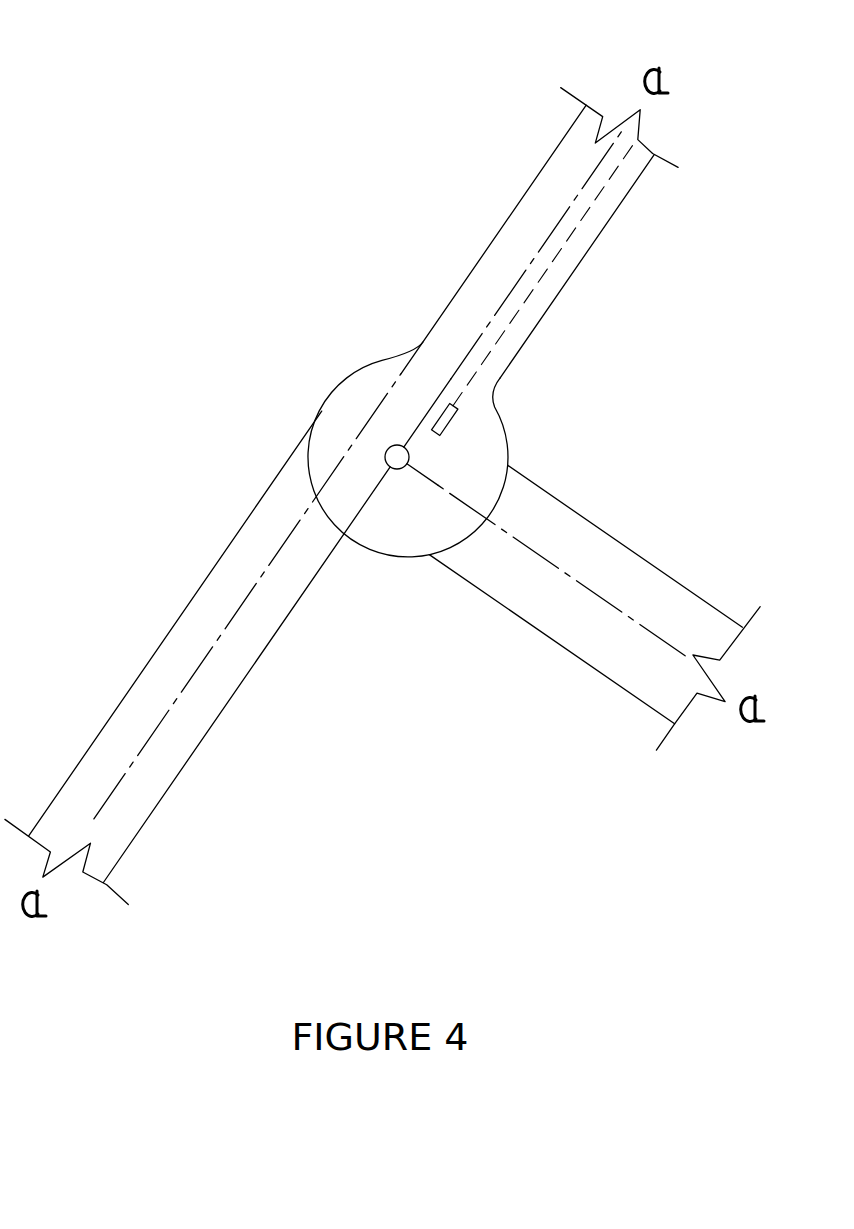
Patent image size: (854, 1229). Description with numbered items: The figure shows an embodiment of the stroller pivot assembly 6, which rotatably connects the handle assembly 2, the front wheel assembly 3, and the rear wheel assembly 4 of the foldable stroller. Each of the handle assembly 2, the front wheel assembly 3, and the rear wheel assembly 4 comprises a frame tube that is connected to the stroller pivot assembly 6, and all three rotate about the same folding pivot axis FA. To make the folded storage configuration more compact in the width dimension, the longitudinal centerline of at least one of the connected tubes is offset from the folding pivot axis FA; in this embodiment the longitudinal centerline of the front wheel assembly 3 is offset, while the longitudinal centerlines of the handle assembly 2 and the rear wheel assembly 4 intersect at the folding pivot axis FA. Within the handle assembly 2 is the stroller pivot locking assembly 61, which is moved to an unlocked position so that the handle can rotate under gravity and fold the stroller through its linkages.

The handle assembly 2 is at (530, 213).
The front wheel assembly 3 is at (150, 691).
The rear wheel assembly 4 is at (638, 585).
The stroller pivot assembly 6 is at (243, 228).
The stroller pivot locking assembly 61 is at (542, 283).
The folding pivot axis FA is at (386, 453).